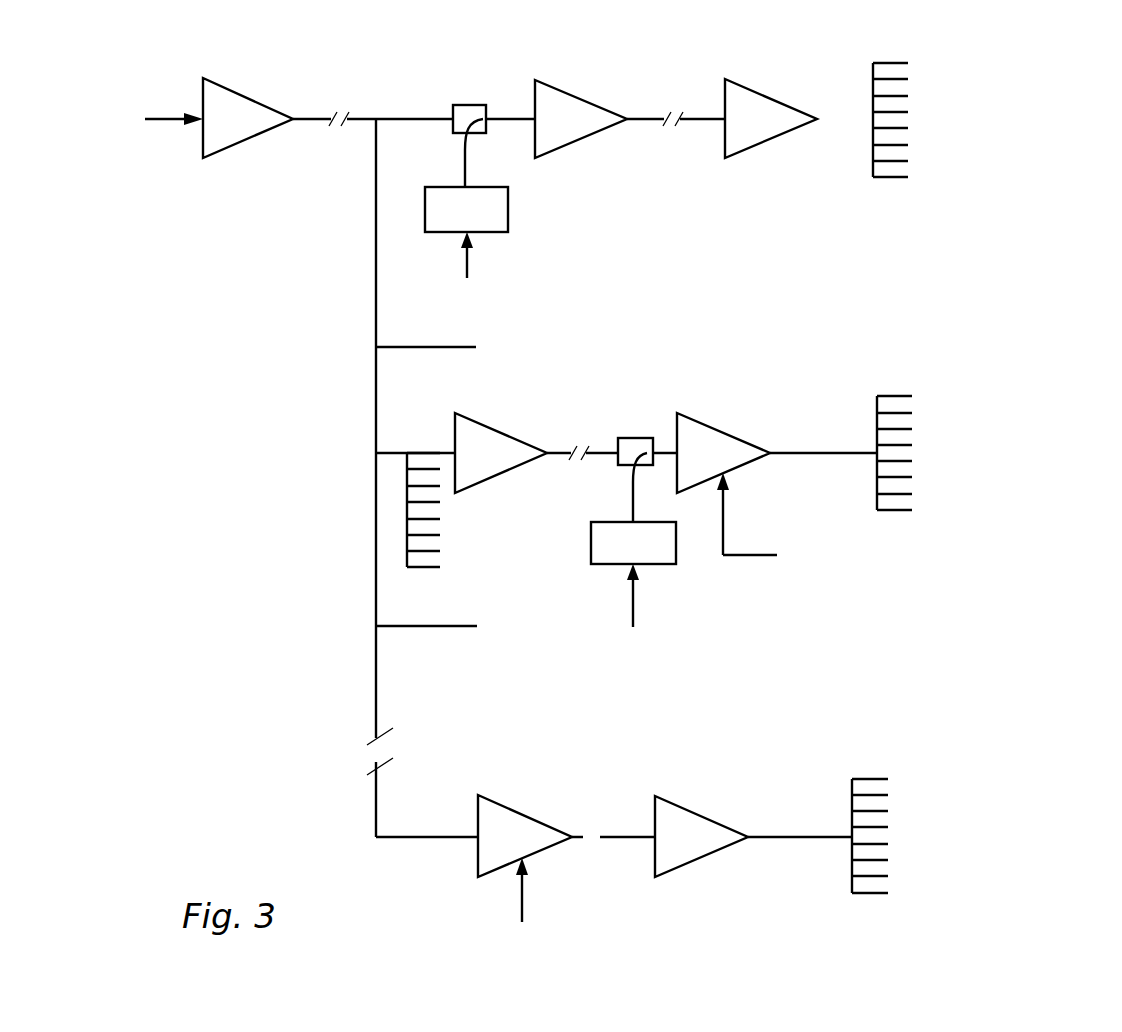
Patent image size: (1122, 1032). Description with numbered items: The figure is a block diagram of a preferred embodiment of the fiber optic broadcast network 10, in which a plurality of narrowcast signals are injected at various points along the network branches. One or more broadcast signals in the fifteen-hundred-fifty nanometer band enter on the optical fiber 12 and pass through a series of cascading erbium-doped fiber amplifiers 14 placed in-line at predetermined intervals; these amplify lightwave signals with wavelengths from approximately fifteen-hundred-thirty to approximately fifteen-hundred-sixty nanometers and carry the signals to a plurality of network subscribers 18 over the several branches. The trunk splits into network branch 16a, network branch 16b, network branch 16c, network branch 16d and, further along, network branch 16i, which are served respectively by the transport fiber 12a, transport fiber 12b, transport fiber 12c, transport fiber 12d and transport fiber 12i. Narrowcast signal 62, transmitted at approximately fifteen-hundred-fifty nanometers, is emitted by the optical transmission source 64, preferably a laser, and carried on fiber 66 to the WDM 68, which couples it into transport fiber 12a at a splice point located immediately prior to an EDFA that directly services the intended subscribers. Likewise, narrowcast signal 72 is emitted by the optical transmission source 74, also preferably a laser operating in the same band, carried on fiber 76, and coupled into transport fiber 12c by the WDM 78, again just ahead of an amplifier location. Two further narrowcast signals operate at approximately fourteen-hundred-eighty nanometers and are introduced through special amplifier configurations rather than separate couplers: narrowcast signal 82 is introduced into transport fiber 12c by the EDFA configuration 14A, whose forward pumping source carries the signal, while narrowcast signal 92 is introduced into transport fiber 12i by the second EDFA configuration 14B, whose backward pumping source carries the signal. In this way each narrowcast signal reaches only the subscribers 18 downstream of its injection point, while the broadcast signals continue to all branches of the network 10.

The fiber optic broadcast network 10 is at (640, 78).
The optical fiber 12 is at (163, 122).
The transport fiber 12a is at (401, 122).
The transport fiber 12b is at (393, 350).
The transport fiber 12c is at (392, 456).
The transport fiber 12d is at (435, 630).
The transport fiber 12i is at (392, 843).
The erbium-doped fiber amplifier 14 is at (249, 98).
The EDFA configuration 14A is at (725, 434).
The EDFA configuration 14B is at (505, 806).
The network branch 16a is at (393, 115).
The network branch 16b is at (394, 343).
The network branch 16c is at (427, 449).
The network branch 16d is at (395, 622).
The network branch 16i is at (438, 831).
The network subscribers 18 is at (873, 60).
The narrowcast signal 62 is at (468, 262).
The optical transmission source 64 is at (508, 210).
The fiber 66 is at (466, 163).
The WDM 68 is at (469, 105).
The narrowcast signal 72 is at (635, 610).
The optical transmission source 74 is at (591, 546).
The fiber 76 is at (632, 490).
The WDM 78 is at (632, 438).
The narrowcast signal 82 is at (725, 512).
The narrowcast signal 92 is at (524, 898).